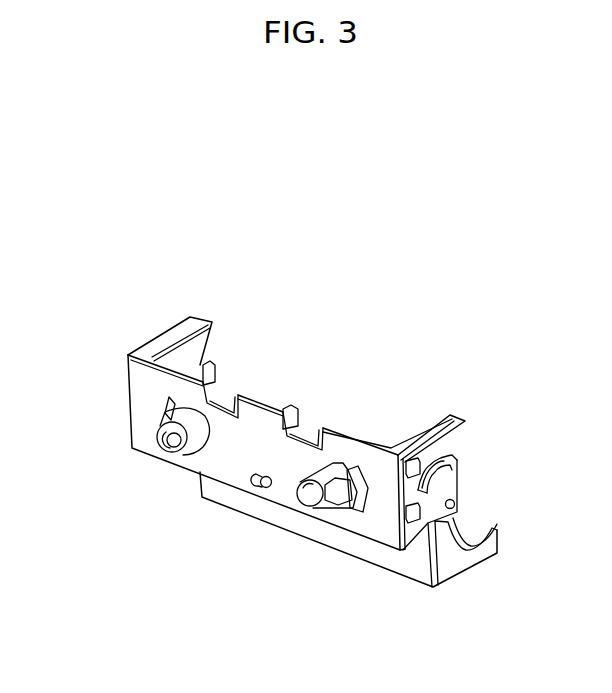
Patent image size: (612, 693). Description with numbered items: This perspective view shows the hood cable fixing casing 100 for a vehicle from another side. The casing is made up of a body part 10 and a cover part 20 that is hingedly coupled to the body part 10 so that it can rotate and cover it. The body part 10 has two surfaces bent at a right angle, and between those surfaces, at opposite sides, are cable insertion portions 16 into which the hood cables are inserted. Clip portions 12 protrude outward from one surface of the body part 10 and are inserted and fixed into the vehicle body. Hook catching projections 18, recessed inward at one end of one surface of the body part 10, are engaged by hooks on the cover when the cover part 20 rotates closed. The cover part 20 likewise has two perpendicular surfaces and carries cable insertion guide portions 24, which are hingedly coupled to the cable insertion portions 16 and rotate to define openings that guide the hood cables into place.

The hood cable fixing casing 100 is at (286, 243).
The body part 10 is at (110, 413).
The clip portion 12 is at (179, 468).
The cable insertion portion 16 is at (437, 458).
The hook catching projection 18 is at (308, 427).
The cover part 20 is at (490, 582).
The cable insertion guide portion 24 is at (455, 524).